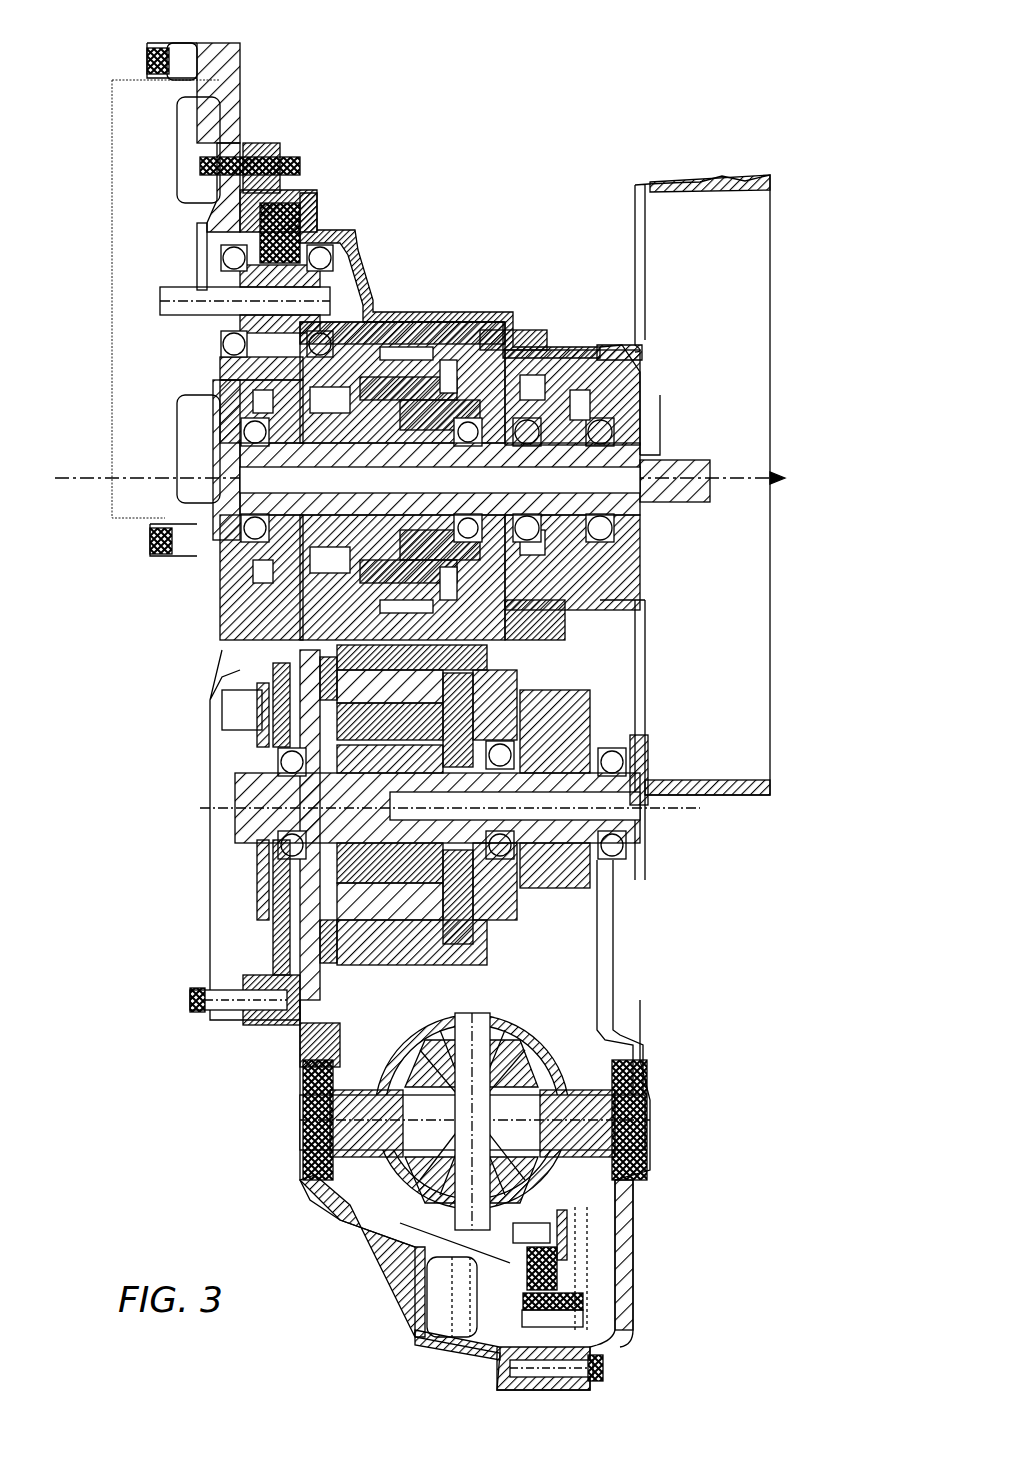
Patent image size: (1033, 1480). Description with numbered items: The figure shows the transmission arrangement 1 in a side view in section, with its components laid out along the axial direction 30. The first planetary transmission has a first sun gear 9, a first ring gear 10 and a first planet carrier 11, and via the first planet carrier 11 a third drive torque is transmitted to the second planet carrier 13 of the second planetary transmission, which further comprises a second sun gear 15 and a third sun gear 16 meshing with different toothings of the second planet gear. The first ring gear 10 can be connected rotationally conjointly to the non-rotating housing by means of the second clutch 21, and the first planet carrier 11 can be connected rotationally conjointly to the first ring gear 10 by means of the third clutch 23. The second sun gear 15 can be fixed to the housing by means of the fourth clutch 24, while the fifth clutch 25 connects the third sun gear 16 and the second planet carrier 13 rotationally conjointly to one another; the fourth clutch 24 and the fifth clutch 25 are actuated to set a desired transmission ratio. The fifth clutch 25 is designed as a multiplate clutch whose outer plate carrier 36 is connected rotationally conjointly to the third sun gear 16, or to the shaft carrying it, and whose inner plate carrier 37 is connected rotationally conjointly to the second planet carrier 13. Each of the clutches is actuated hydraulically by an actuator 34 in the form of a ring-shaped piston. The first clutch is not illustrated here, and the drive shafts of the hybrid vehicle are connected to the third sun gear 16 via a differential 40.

The transmission arrangement 1 is at (545, 128).
The first sun gear 9 is at (55, 477).
The first ring gear 10 is at (405, 335).
The first planet carrier 11 is at (400, 580).
The second planet carrier 13 is at (400, 660).
The second sun gear 15 is at (380, 783).
The third sun gear 16 is at (470, 770).
The second clutch 21 is at (560, 375).
The third clutch 23 is at (485, 400).
The fourth clutch 24 is at (235, 917).
The fifth clutch 25 is at (440, 960).
The axial direction 30 is at (535, 484).
The actuator 34 is at (597, 372).
The outer plate carrier 36 is at (507, 762).
The inner plate carrier 37 is at (410, 672).
The differential 40 is at (585, 1188).